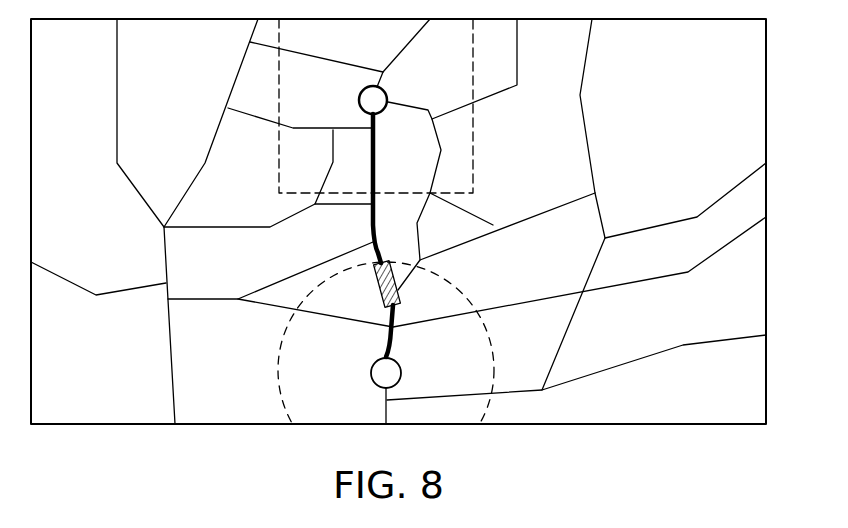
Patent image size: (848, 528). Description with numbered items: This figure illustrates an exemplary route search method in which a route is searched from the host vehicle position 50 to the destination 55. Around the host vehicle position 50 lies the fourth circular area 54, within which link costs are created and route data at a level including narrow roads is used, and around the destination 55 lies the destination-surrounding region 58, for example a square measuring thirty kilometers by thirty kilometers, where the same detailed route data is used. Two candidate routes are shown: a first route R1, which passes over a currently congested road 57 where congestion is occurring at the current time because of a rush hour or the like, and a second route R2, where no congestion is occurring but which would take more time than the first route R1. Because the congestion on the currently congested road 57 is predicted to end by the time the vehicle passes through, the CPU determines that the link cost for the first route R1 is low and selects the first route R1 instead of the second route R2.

The host vehicle position 50 is at (371, 373).
The fourth circular area 54 is at (448, 281).
The destination 55 is at (358, 100).
The currently congested road 57 is at (378, 285).
The destination-surrounding region 58 is at (475, 130).
The first route R1 is at (372, 228).
The second route R2 is at (432, 163).